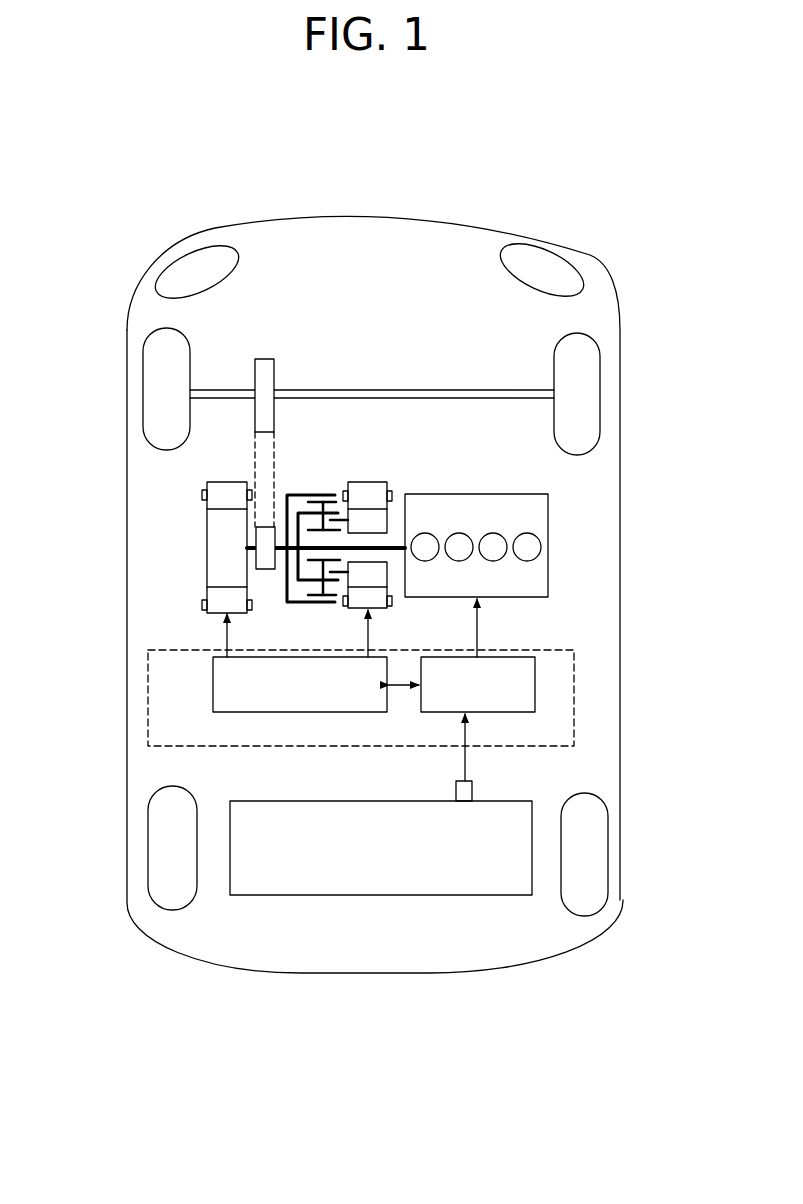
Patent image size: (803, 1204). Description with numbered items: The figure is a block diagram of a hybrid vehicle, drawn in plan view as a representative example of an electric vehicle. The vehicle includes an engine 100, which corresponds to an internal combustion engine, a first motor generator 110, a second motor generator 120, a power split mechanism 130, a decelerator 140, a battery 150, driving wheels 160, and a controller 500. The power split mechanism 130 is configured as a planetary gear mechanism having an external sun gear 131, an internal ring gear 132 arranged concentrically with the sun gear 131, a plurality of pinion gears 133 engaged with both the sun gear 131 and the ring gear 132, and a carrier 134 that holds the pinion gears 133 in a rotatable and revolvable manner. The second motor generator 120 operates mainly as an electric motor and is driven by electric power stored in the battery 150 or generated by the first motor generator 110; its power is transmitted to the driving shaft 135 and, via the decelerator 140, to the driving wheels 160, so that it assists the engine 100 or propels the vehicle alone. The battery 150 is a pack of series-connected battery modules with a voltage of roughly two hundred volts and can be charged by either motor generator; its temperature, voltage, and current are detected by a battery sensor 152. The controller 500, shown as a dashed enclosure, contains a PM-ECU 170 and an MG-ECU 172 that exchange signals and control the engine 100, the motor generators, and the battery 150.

The engine 100 is at (450, 494).
The first motor generator 110 is at (342, 402).
The second motor generator 120 is at (207, 548).
The power split mechanism 130 is at (315, 435).
The sun gear 131 is at (338, 497).
The ring gear 132 is at (300, 493).
The pinion gears 133 is at (332, 600).
The carrier 134 is at (307, 605).
The driving shaft 135 is at (278, 557).
The decelerator 140 is at (267, 340).
The battery 150 is at (308, 896).
The battery sensor 152 is at (456, 793).
The driving wheels 160 is at (143, 415).
The PM-ECU 170 is at (535, 685).
The MG-ECU 172 is at (213, 685).
The controller 500 is at (183, 649).